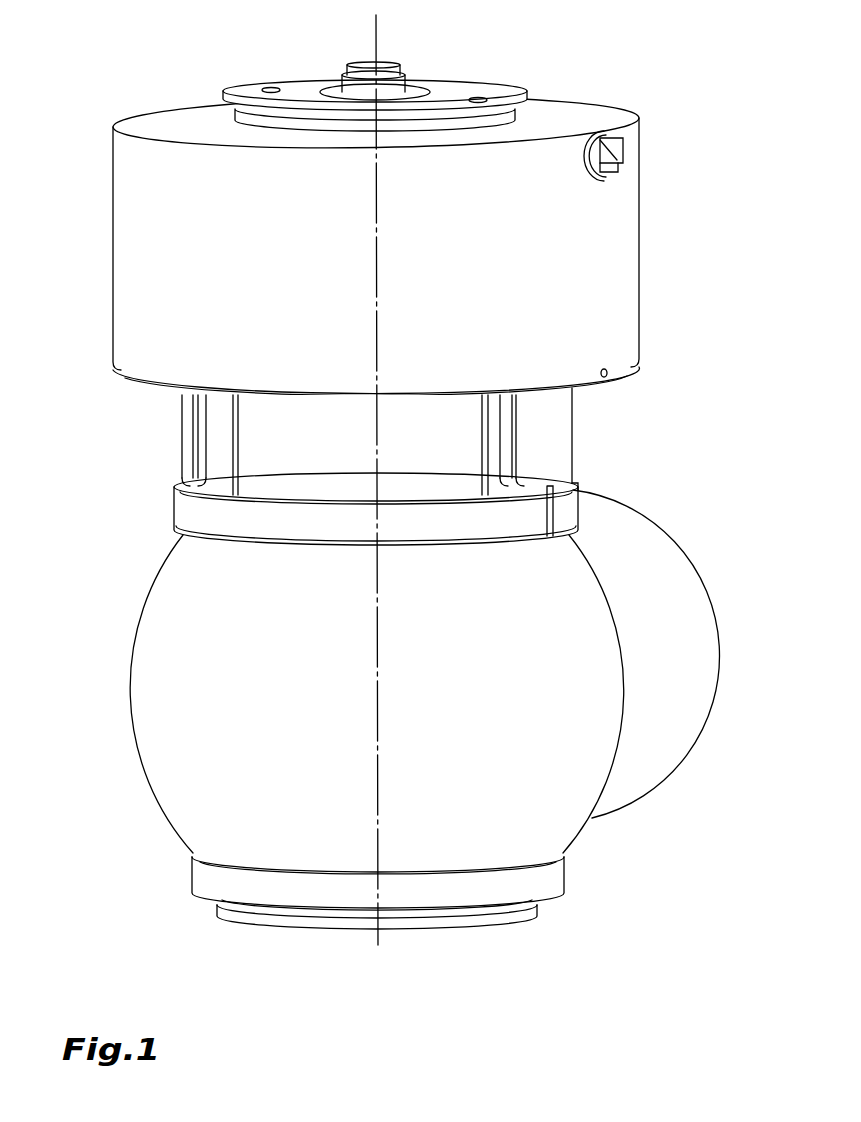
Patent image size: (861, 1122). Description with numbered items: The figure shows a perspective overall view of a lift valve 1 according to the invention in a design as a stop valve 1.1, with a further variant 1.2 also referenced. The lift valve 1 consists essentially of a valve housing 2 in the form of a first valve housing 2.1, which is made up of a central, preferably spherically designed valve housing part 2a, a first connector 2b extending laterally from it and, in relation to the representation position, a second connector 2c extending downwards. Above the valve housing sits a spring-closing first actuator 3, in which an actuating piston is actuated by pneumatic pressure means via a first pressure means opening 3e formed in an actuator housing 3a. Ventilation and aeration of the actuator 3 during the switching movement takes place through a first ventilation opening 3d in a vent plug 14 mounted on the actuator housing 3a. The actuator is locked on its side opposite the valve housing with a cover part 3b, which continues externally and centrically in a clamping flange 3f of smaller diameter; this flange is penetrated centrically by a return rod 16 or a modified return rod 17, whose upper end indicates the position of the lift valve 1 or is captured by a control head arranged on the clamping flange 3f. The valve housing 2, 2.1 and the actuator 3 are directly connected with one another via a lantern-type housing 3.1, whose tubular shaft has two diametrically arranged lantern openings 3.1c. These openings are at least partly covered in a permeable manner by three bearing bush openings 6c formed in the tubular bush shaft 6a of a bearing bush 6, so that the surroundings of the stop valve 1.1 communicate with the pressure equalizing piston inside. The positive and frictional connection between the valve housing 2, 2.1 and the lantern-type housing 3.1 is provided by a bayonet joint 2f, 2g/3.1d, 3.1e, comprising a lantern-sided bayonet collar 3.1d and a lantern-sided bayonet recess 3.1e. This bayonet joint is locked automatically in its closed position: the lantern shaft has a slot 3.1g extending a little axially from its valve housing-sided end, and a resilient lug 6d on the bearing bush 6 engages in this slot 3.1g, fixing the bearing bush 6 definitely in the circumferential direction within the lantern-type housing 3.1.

The lift valve 1 is at (412, 504).
The stop valve 1.1 is at (412, 504).
The liquid container system variant 1.2 is at (412, 504).
The valve housing 2 is at (400, 735).
The first valve housing 2.1 is at (400, 735).
The valve housing part 2a is at (218, 630).
The first connector 2b is at (640, 555).
The second connector 2c is at (451, 918).
The bayonet joint element 2f is at (353, 540).
The bayonet joint element 2g is at (166, 537).
The first actuator 3 is at (439, 207).
The actuator housing 3a is at (596, 301).
The cover top 3b is at (551, 120).
The first ventilation opening 3d is at (576, 195).
The first pressure means opening 3e is at (605, 153).
The clamping flange 3f is at (231, 106).
The lantern-type housing 3.1 is at (405, 488).
The lantern openings 3.1c is at (187, 437).
The lantern-sided bayonet collar 3.1d is at (353, 540).
The lantern-sided bayonet recess 3.1e is at (353, 540).
The slot 3.1g is at (520, 542).
The bearing bush 6 is at (267, 453).
The bush shaft 6a is at (352, 445).
The bearing bush openings 6c is at (218, 433).
The lug 6d is at (520, 542).
The vent plug 14 is at (647, 195).
The return rod 16 is at (390, 59).
The modified return rod 17 is at (381, 83).